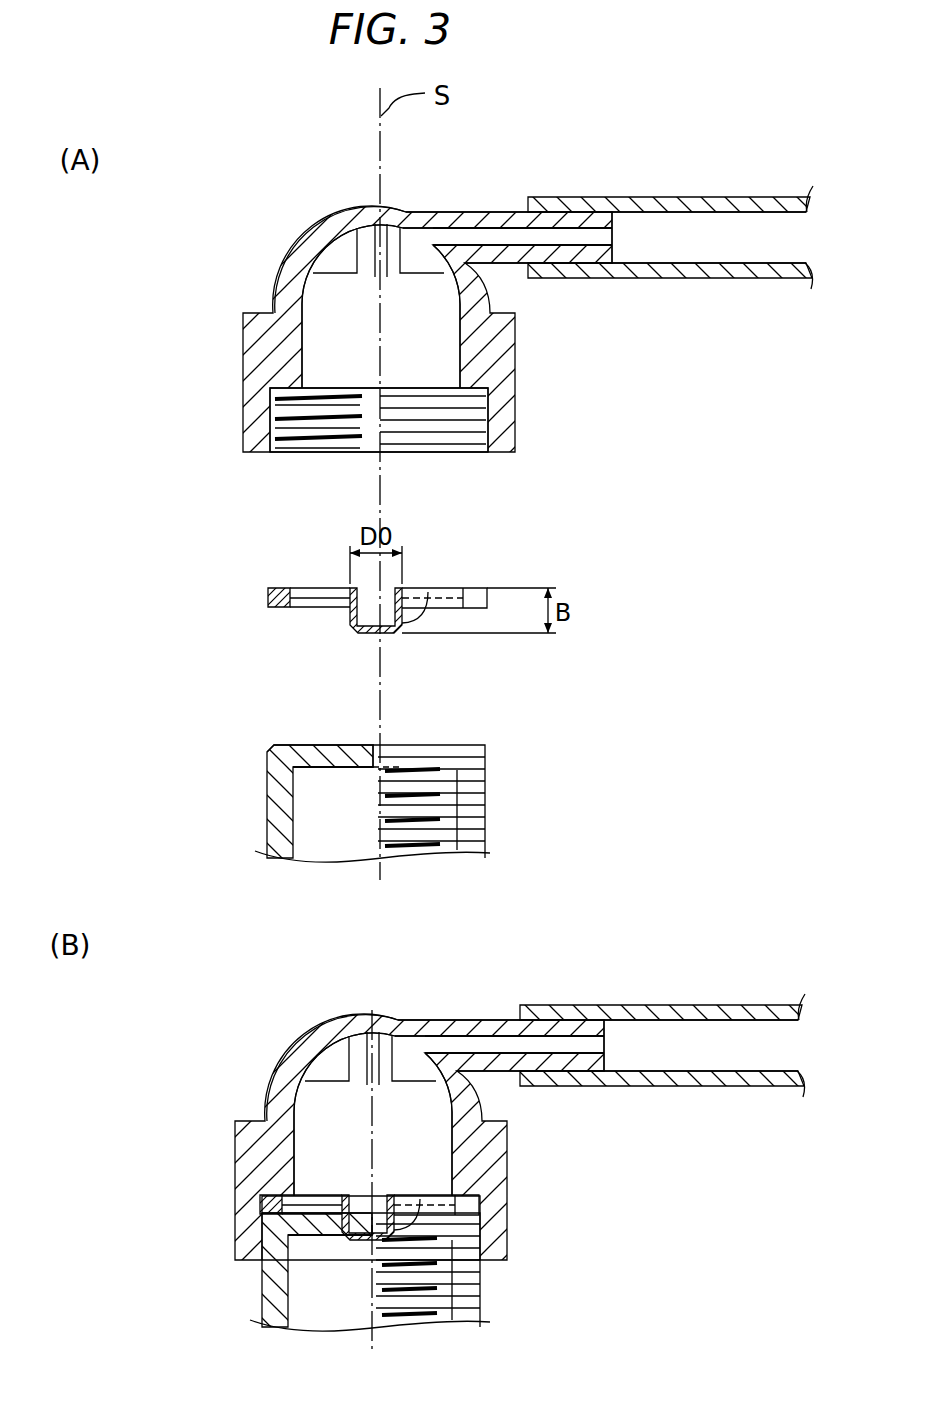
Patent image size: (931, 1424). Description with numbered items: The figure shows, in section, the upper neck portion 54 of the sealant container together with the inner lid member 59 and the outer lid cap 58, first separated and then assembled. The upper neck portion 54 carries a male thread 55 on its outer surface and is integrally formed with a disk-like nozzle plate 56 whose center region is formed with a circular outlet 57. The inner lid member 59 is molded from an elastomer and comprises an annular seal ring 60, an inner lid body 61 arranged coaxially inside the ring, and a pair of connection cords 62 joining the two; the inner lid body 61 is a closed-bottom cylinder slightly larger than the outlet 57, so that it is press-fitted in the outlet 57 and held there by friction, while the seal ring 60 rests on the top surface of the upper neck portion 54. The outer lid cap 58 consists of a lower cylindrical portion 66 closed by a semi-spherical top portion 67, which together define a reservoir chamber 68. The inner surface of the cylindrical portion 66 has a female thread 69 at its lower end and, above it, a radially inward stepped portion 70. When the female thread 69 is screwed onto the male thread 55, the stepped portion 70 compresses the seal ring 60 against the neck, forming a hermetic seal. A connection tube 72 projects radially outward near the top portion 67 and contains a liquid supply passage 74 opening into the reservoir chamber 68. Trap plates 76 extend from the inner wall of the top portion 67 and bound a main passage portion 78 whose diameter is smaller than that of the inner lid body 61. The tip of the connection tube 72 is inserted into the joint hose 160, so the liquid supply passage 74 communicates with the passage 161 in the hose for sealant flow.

The upper neck portion 54 is at (371, 1006).
The male thread 55 is at (485, 797).
The nozzle plate 56 is at (305, 752).
The outlet 57 is at (356, 745).
The outer lid cap 58 is at (232, 242).
The inner lid member 59 is at (368, 863).
The seal ring 60 is at (268, 598).
The inner lid body 61 is at (428, 605).
The connection cords 62 is at (307, 610).
The cylindrical portion 66 is at (243, 373).
The top portion 67 is at (323, 219).
The reservoir chamber 68 is at (324, 373).
The female thread 69 is at (477, 433).
The stepped portion 70 is at (270, 418).
The connection tube 72 is at (492, 212).
The liquid supply passage 74 is at (573, 250).
The trap plates 76 is at (335, 275).
The main passage portion 78 is at (420, 214).
The joint hose 160 is at (705, 197).
The passage 161 is at (713, 250).